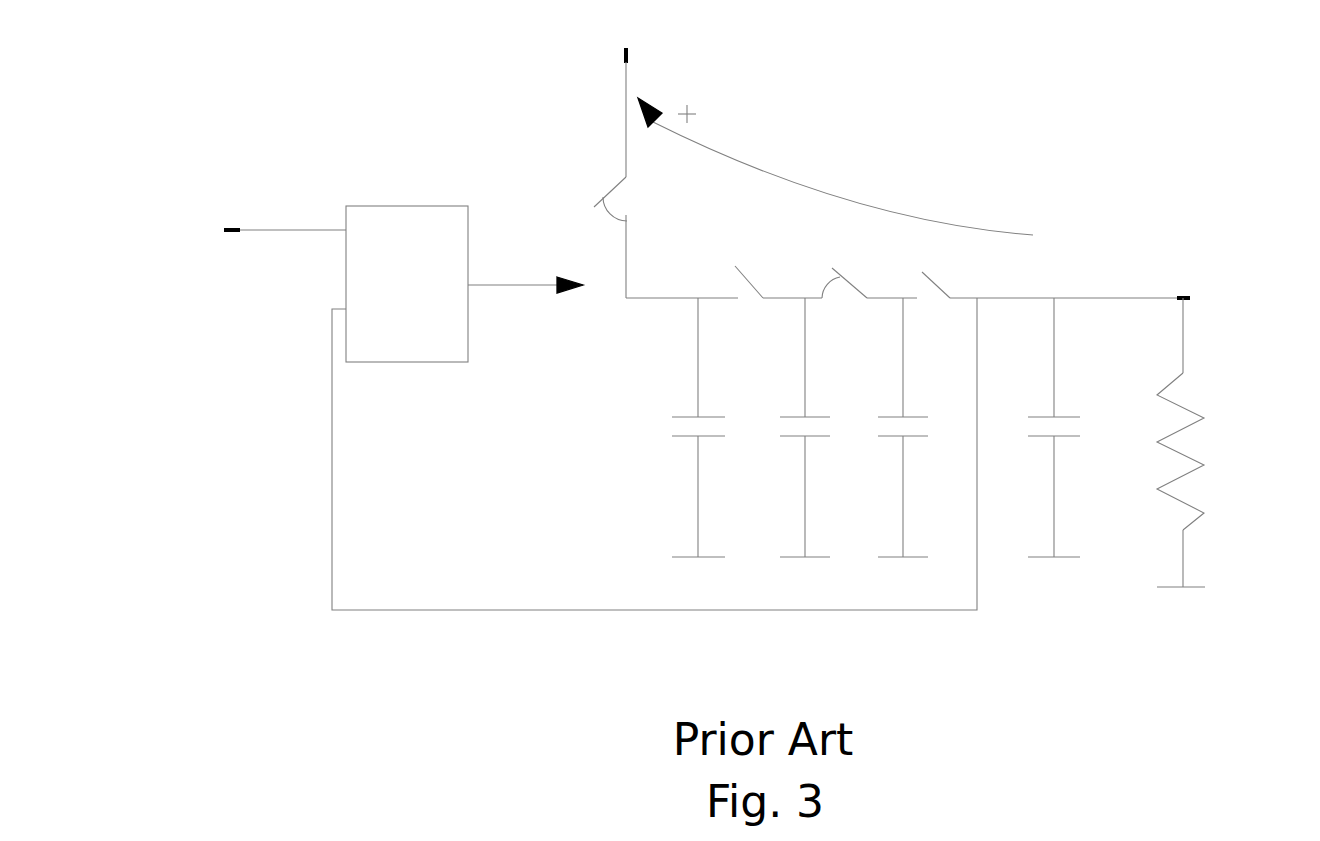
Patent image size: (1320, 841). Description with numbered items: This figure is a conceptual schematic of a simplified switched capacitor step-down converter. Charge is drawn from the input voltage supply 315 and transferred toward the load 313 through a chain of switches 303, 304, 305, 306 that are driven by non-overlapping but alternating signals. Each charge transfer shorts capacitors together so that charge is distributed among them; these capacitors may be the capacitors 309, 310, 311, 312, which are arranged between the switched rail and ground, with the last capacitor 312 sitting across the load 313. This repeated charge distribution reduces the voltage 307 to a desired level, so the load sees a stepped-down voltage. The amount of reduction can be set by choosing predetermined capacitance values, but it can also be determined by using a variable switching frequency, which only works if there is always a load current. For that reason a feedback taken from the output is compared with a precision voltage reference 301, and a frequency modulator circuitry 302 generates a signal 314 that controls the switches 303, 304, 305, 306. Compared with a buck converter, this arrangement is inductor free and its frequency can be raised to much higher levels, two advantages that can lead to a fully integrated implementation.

The precision voltage reference 301 is at (247, 230).
The frequency modulator circuitry 302 is at (415, 206).
The switch 303 is at (607, 187).
The switch 304 is at (738, 285).
The switch 305 is at (828, 282).
The switch 306 is at (937, 283).
The voltage 307 is at (745, 132).
The capacitor 309 is at (685, 437).
The capacitor 310 is at (795, 437).
The capacitor 311 is at (893, 437).
The capacitor 312 is at (1043, 438).
The load 313 is at (1207, 403).
The signal 314 is at (517, 287).
The input voltage supply 315 is at (623, 78).